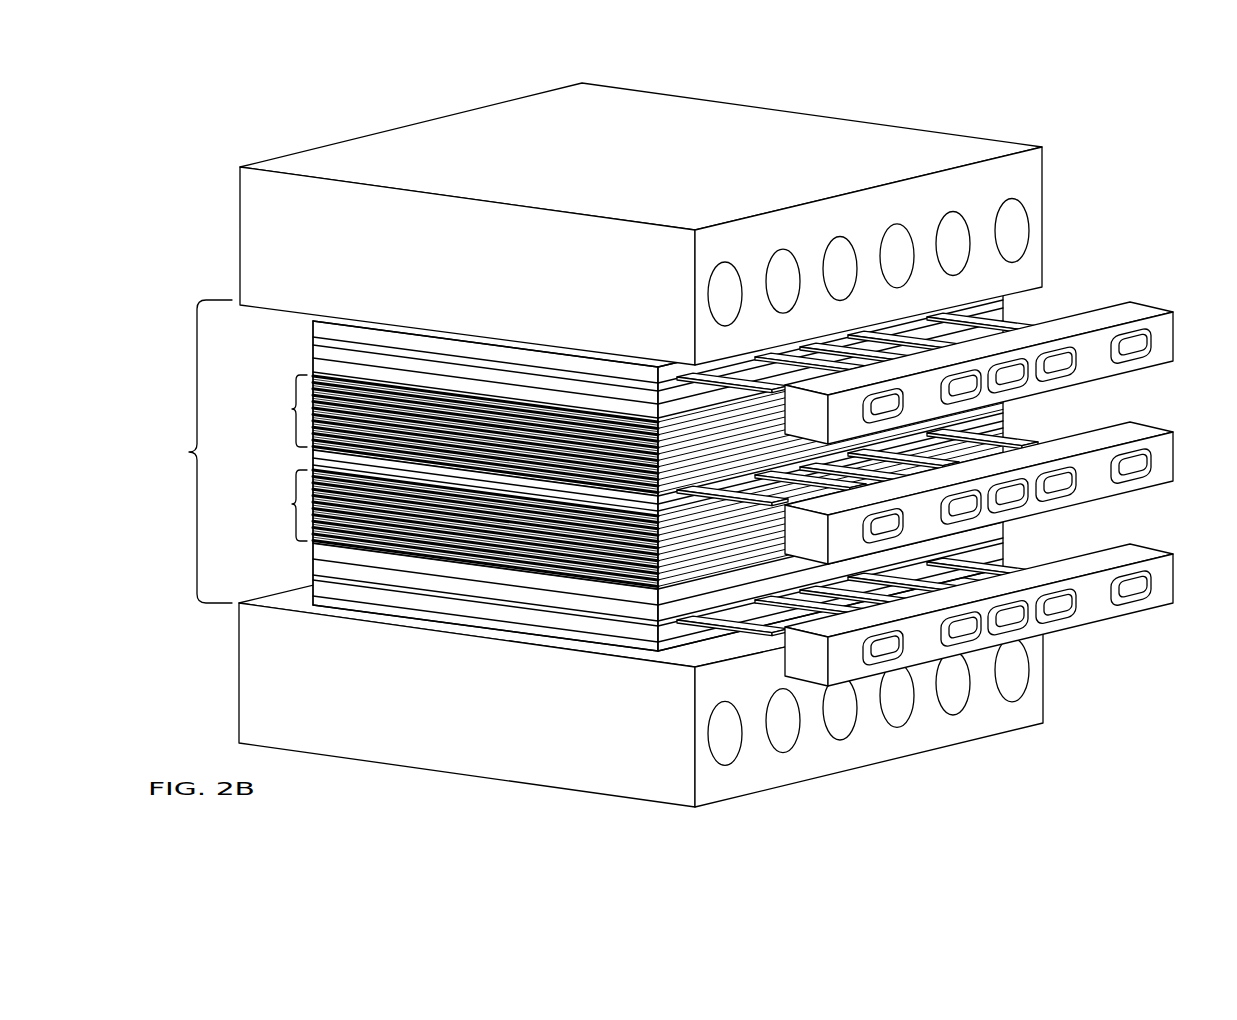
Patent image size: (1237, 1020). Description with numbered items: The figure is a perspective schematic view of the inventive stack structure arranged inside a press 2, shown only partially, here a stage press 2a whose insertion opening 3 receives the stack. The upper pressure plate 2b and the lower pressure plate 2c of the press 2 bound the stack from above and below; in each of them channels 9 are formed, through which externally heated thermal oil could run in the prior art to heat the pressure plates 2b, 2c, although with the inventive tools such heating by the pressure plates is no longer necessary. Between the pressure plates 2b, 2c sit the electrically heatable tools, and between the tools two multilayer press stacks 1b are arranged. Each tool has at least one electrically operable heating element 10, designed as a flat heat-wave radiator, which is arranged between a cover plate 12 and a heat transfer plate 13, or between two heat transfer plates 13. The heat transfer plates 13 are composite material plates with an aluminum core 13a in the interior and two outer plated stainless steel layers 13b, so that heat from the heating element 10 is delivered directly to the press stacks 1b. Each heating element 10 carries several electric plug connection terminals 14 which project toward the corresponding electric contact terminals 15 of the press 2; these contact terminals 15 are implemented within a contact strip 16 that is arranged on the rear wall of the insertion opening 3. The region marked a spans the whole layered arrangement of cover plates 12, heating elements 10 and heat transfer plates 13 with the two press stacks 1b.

The press 2 is at (702, 436).
The stage press 2a is at (985, 108).
The upper pressure plate 2b is at (677, 224).
The lower pressure plate 2c is at (486, 700).
The channels 9 is at (1022, 217).
The electrically operable heating element 10 is at (317, 337).
The cover plate 12 is at (324, 323).
The heat transfer plate 13 is at (317, 450).
The aluminum core 13a is at (325, 358).
The plated stainless steel layer 13b is at (325, 345).
The electric plug connection terminal 14 is at (923, 340).
The electric contact terminal 15 is at (1146, 351).
The contact strip 16 is at (1138, 309).
The multilayer press stack 1b is at (631, 464).
The insertion opening 3 is at (586, 467).
The stack region a is at (201, 451).